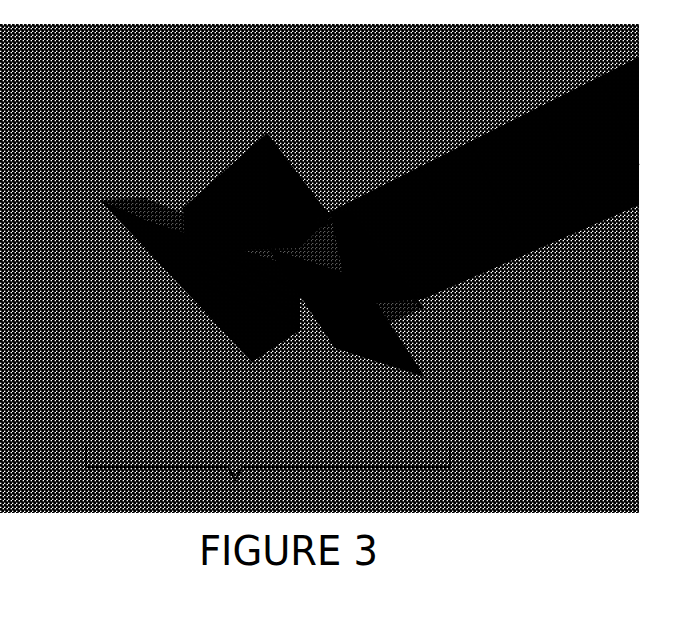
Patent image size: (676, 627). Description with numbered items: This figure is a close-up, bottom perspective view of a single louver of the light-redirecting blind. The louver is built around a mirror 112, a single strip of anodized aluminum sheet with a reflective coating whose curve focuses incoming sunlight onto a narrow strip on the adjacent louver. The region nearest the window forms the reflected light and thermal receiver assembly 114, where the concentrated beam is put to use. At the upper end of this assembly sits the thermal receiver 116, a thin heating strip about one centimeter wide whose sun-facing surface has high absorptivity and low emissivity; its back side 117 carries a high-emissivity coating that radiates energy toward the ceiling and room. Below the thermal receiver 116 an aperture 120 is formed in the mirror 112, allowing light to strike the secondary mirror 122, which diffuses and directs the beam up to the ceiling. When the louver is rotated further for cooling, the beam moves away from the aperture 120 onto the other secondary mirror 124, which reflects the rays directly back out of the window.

The mirror 112 is at (545, 236).
The reflected light and thermal receiver assembly 114 is at (268, 477).
The thermal receiver 116 is at (392, 366).
The back side 117 is at (412, 311).
The aperture 120 is at (290, 346).
The secondary mirror 122 is at (280, 175).
The other secondary mirror 124 is at (162, 285).